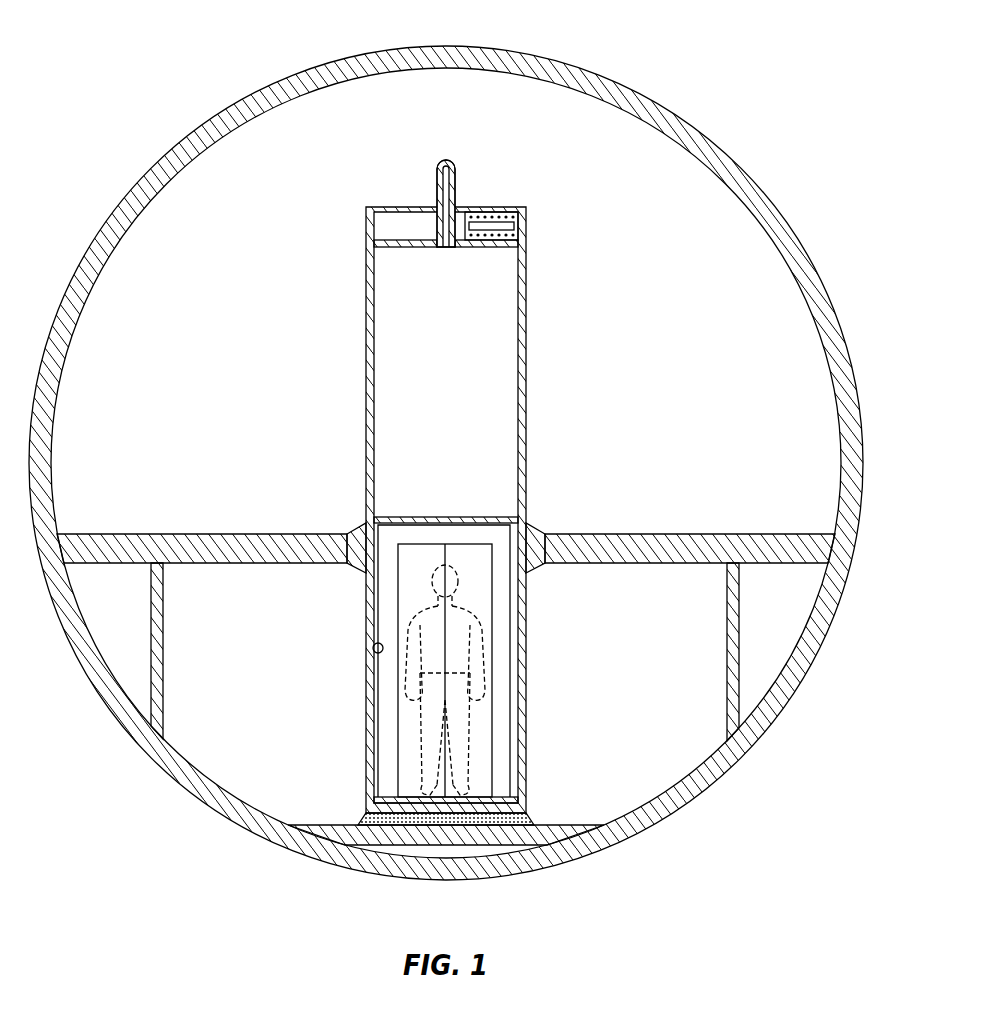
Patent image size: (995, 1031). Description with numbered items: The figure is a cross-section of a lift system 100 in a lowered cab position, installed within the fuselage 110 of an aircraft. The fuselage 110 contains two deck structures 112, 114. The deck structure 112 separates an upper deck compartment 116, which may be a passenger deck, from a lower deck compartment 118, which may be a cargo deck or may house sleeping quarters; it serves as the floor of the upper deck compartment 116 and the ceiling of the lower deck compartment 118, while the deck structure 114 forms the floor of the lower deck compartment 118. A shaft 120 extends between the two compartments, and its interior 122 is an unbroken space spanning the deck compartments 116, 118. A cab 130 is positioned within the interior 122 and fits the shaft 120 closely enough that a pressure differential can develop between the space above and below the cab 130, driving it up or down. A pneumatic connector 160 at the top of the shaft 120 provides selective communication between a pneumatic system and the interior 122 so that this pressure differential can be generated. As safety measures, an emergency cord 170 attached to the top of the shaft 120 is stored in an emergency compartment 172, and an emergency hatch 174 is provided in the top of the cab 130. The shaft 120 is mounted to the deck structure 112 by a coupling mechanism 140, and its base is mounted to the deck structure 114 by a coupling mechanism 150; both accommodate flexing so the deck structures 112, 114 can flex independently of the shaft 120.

The lift system 100 is at (126, 57).
The fuselage 110 is at (445, 46).
The deck structure 112 is at (224, 534).
The deck structure 114 is at (320, 825).
The upper deck compartment 116 is at (221, 328).
The lower deck compartment 118 is at (562, 674).
The shaft 120 is at (366, 380).
The interior of the shaft 122 is at (459, 413).
The cab 130 is at (373, 648).
The coupling mechanism 140 is at (350, 528).
The coupling mechanism 150 is at (530, 815).
The pneumatic connector 160 is at (437, 185).
The emergency cord 170 is at (488, 212).
The emergency compartment 172 is at (483, 247).
The emergency hatch 174 is at (437, 517).